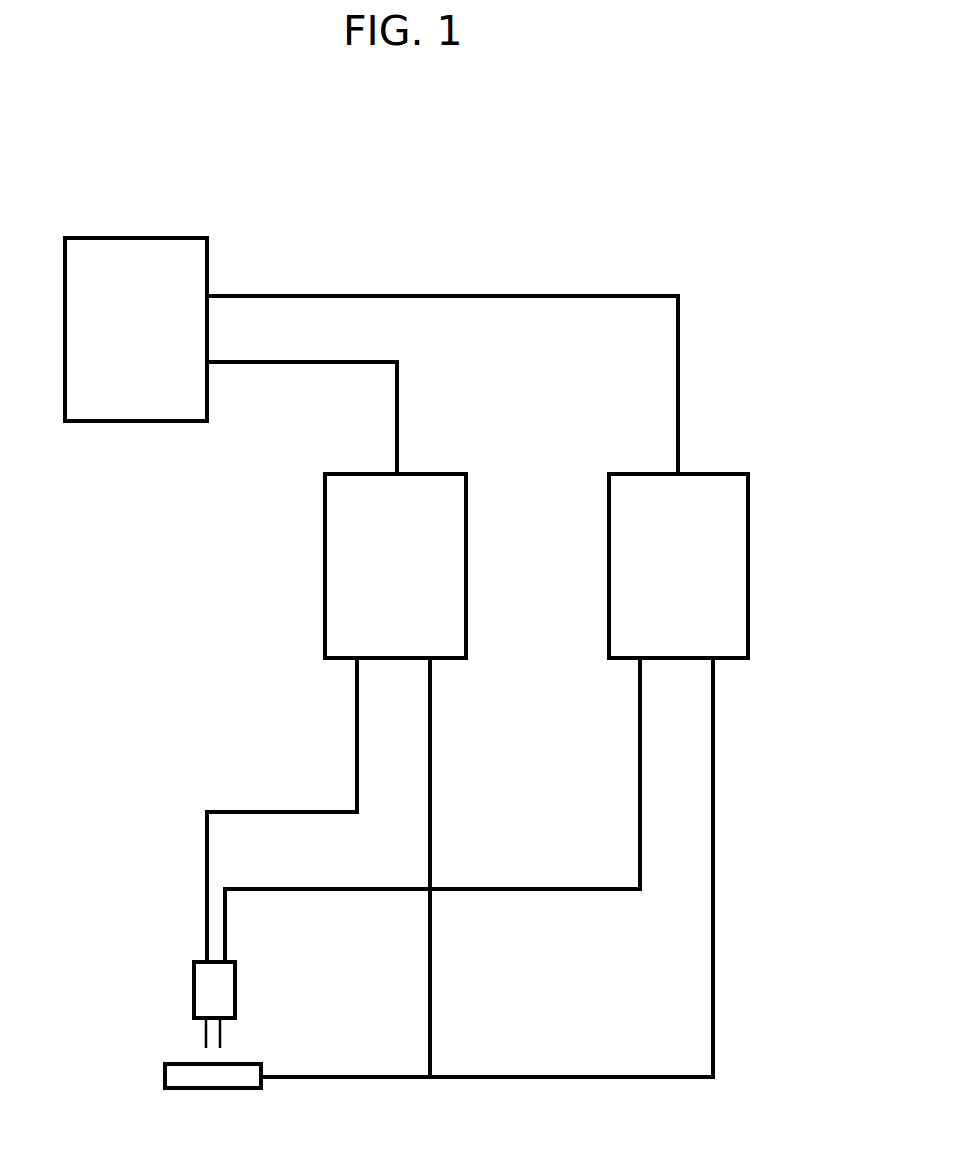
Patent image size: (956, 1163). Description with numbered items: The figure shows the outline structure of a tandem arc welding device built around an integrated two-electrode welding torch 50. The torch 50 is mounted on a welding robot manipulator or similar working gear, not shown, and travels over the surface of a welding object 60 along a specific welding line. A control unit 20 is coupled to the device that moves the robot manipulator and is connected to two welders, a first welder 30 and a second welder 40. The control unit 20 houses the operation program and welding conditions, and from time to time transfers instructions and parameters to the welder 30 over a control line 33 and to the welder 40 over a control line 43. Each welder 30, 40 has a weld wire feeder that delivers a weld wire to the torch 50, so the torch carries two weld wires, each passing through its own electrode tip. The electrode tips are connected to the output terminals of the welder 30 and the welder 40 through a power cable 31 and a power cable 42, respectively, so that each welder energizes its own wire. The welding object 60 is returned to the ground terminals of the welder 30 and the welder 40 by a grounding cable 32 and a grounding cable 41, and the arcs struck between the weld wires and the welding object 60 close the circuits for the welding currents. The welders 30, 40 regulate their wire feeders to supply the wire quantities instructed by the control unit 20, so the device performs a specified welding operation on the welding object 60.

The control unit 20 is at (142, 232).
The welder 30 is at (323, 557).
The power cable 31 is at (356, 742).
The grounding cable 32 is at (434, 727).
The control line 33 is at (297, 363).
The welder 40 is at (752, 552).
The grounding cable 41 is at (717, 752).
The power cable 42 is at (638, 839).
The control line 43 is at (450, 293).
The integrated 2-electrode welding torch 50 is at (192, 998).
The welding object 60 is at (163, 1075).